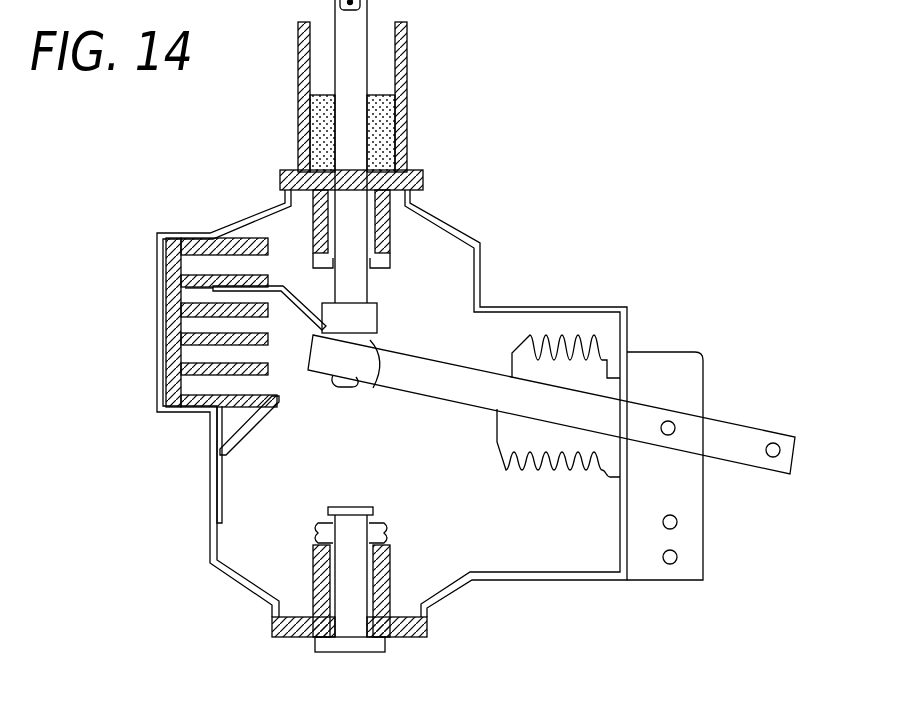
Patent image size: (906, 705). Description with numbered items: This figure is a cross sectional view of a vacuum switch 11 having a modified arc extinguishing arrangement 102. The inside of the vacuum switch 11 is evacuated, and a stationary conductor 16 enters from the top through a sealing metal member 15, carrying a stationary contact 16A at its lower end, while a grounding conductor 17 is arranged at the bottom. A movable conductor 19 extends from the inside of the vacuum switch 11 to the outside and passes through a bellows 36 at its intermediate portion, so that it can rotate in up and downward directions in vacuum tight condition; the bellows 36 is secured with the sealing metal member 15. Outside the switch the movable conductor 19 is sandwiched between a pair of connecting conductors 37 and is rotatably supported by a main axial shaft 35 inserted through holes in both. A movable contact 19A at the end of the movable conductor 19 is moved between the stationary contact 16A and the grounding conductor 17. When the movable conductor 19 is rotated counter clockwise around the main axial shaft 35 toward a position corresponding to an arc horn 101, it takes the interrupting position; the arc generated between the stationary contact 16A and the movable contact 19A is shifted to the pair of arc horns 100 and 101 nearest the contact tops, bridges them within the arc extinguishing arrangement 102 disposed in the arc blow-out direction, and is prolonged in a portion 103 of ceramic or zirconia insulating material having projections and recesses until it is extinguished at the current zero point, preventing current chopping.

The vacuum switch 11 is at (482, 243).
The sealing metal member 15 is at (372, 266).
The stationary conductor 16 is at (360, 130).
The stationary contact 16A is at (370, 318).
The grounding conductor 17 is at (375, 511).
The movable conductor 19 is at (442, 395).
The movable contact 19A is at (345, 387).
The main axial shaft 35 is at (672, 425).
The bellows 36 is at (548, 470).
The connecting conductors 37 is at (660, 352).
The arc horn 100 is at (315, 300).
The arc horn 101 is at (270, 425).
The arc extinguishing arrangement 102 is at (180, 338).
The portion of ceramic insulating material 103 is at (193, 292).